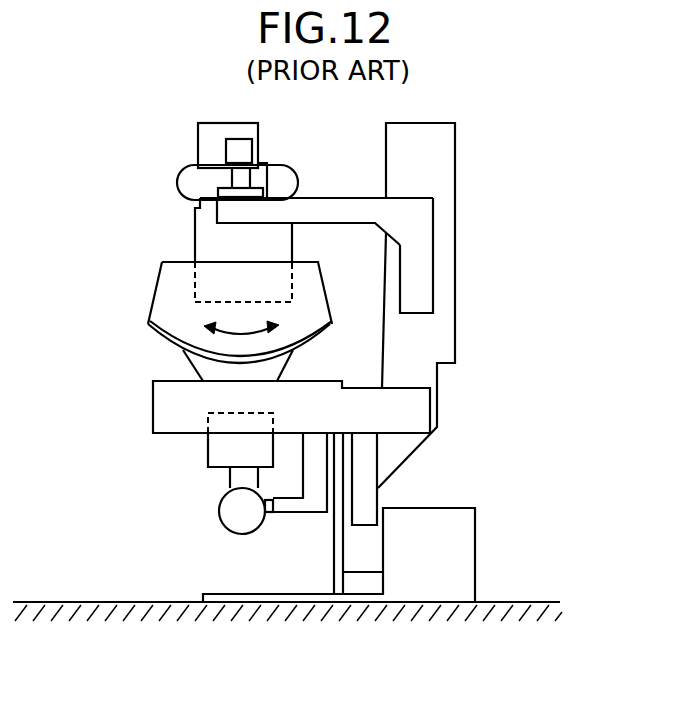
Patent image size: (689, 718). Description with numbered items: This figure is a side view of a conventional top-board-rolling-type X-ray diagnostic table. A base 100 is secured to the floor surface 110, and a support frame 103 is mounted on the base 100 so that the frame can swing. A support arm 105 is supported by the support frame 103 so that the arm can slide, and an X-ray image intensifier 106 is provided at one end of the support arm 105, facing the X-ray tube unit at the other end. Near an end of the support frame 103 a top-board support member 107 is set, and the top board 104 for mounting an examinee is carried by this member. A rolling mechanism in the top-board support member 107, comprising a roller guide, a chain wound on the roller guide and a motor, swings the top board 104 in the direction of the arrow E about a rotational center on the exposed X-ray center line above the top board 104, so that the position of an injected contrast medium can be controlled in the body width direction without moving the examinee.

The base 100 is at (467, 547).
The support frame 103 is at (150, 406).
The top board 104 is at (312, 338).
The support arm 105 is at (443, 161).
The X-ray image intensifier 106 is at (197, 233).
The top-board support member 107 is at (180, 363).
The floor surface 110 is at (87, 602).